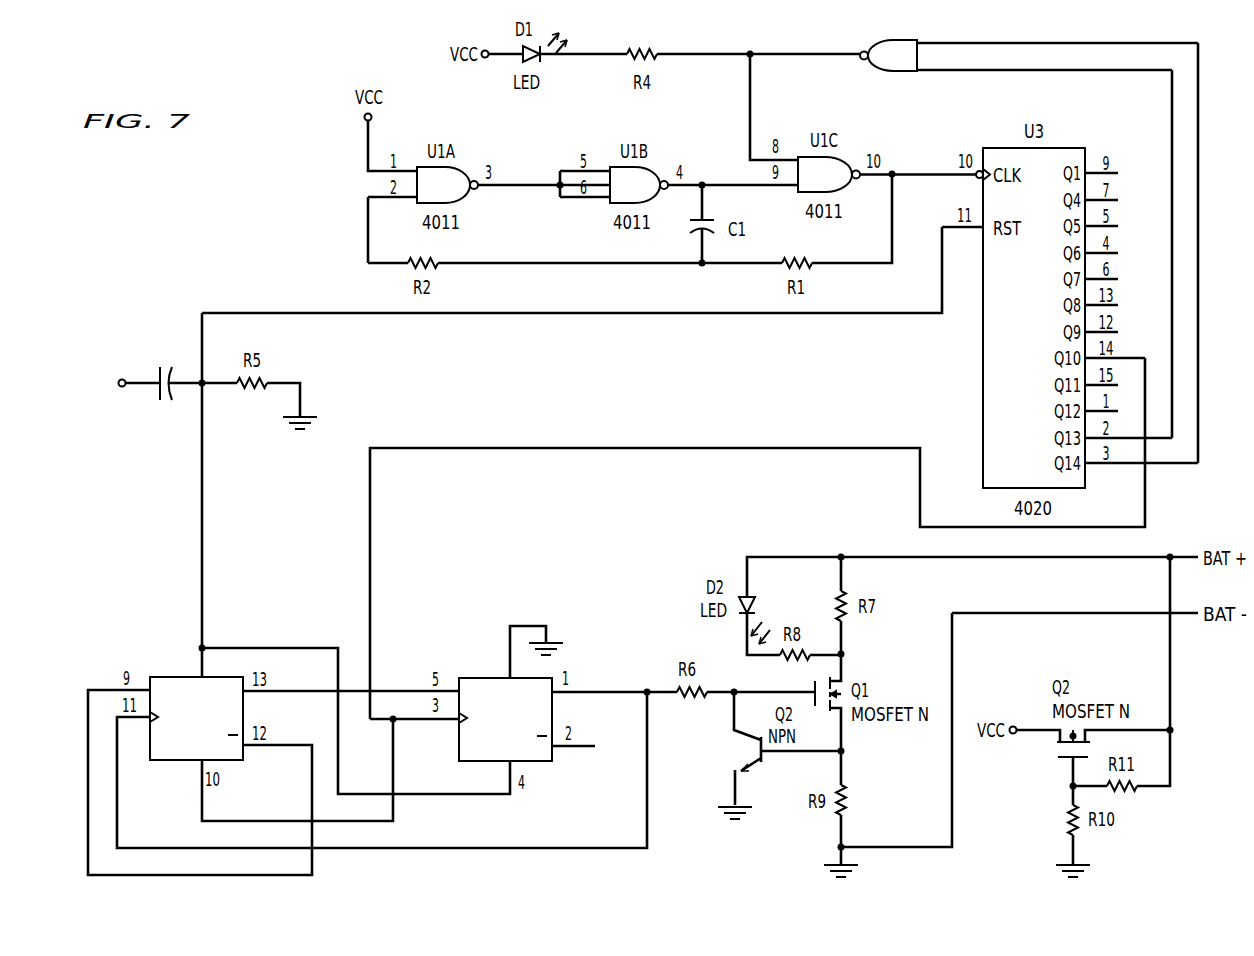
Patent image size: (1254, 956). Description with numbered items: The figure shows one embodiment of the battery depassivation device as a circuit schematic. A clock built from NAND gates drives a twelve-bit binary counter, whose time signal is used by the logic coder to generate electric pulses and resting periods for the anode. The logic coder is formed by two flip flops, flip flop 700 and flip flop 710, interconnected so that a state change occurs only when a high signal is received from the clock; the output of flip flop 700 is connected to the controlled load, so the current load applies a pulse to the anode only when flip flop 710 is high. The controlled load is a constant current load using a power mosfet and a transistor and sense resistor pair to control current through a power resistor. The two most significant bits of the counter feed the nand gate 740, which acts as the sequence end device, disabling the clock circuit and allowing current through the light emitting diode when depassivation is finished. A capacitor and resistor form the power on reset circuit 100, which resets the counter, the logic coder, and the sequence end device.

The power on reset circuit 100 is at (153, 361).
The flip flop 700 is at (487, 675).
The flip flop 710 is at (177, 675).
The nand gate 740 is at (918, 73).